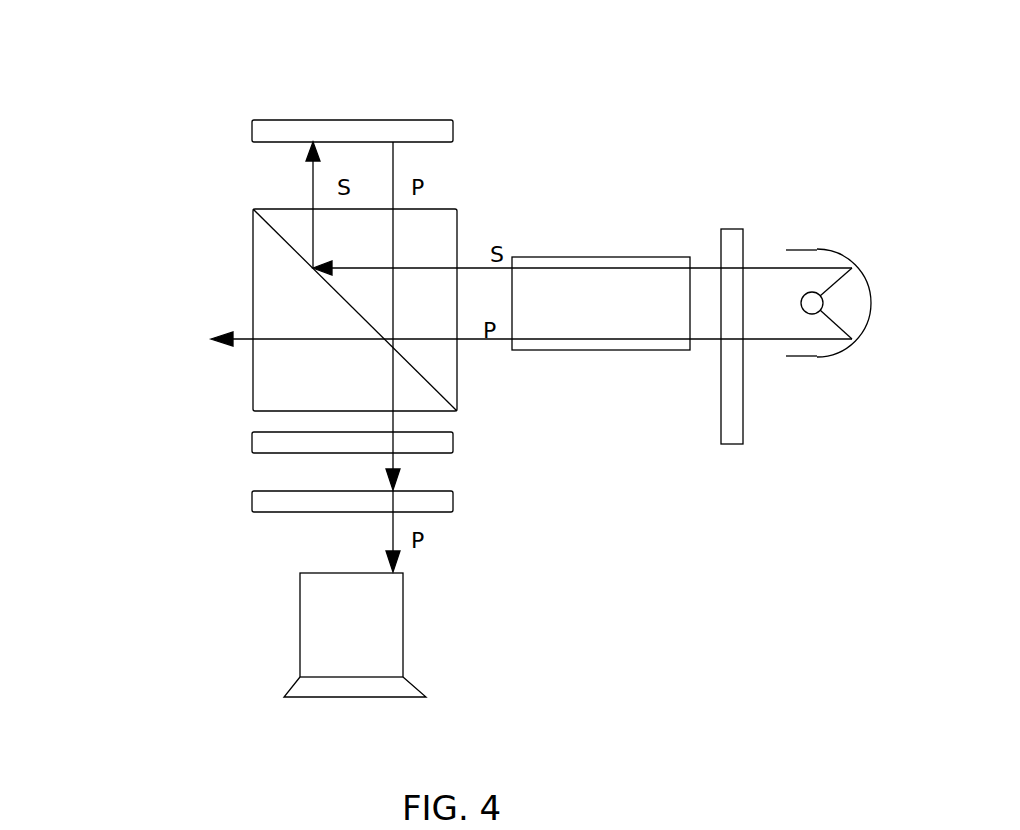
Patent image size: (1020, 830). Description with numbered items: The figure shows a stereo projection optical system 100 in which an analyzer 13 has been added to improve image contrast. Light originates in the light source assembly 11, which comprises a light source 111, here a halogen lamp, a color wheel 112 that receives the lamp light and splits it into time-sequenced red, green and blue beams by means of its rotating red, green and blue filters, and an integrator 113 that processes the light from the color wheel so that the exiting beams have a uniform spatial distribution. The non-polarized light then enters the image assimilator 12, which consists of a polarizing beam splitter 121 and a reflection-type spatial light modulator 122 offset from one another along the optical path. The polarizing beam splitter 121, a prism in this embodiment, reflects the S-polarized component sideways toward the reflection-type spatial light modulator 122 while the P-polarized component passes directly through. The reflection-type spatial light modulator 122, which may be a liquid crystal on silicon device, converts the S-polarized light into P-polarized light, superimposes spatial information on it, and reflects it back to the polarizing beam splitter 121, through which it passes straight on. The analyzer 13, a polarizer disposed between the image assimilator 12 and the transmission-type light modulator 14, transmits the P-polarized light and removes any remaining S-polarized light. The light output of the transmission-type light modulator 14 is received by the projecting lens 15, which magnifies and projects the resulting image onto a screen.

The stereo projection optical system 100 is at (532, 45).
The light source assembly 11 is at (662, 140).
The light source 111 is at (822, 257).
The color wheel 112 is at (732, 238).
The integrator 113 is at (600, 255).
The image assimilator 12 is at (108, 95).
The polarizing beam splitter 121 is at (263, 213).
The reflection-type spatial light modulator 122 is at (267, 133).
The analyzer 13 is at (447, 443).
The transmission-type light modulator 14 is at (253, 500).
The projecting lens 15 is at (418, 635).